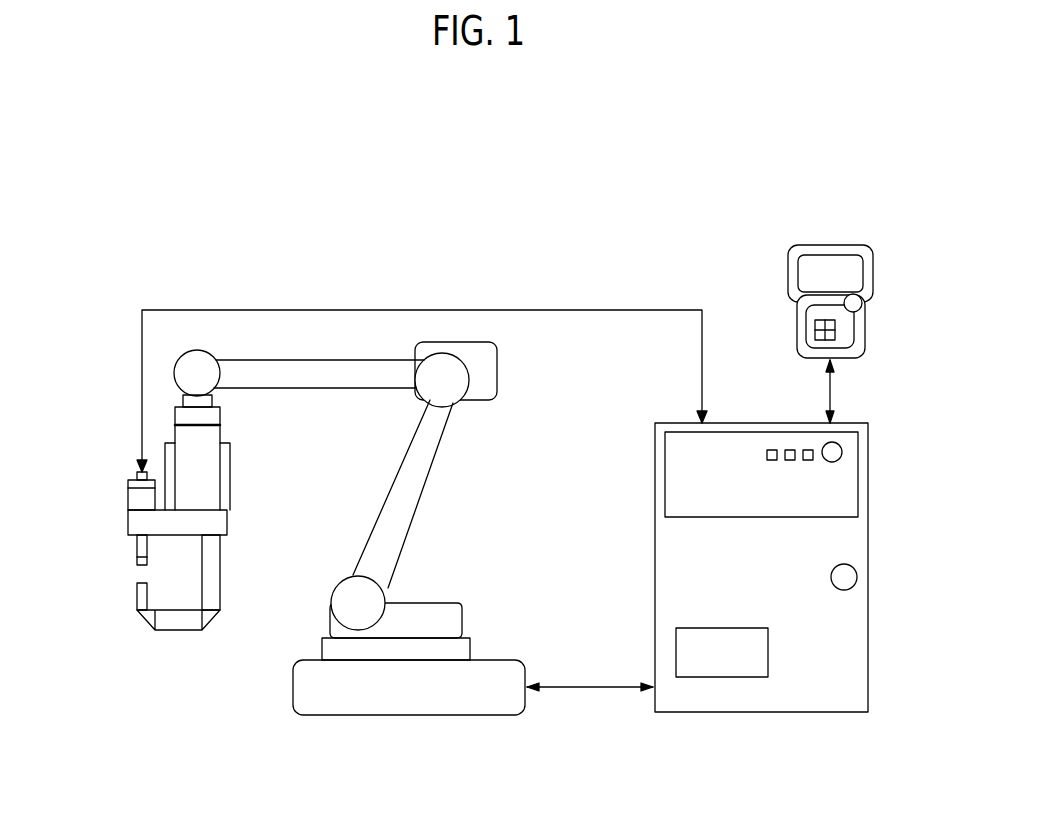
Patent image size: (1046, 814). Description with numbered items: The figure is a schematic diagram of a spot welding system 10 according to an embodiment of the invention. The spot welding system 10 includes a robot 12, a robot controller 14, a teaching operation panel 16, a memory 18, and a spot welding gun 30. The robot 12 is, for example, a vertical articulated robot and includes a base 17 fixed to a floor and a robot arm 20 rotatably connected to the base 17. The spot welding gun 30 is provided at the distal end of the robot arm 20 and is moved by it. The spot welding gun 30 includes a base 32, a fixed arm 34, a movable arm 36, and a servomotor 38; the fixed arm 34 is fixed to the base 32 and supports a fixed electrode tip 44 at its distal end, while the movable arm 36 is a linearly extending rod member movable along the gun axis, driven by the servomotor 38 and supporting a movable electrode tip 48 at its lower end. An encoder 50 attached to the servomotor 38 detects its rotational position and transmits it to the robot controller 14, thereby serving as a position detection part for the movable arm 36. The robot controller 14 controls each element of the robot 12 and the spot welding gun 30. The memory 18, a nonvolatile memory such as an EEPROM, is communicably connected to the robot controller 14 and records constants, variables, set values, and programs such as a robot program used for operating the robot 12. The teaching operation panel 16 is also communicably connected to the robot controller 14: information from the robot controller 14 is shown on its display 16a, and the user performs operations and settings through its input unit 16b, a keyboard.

The spot welding system 10 is at (717, 121).
The robot 12 is at (369, 561).
The robot controller 14 is at (793, 567).
The teaching operation panel 16 is at (828, 261).
The display 16a is at (813, 272).
The input unit 16b is at (817, 322).
The base 17 is at (485, 705).
The memory 18 is at (735, 628).
The robot arm 20 is at (400, 480).
The spot welding gun 30 is at (177, 502).
The base 32 is at (220, 523).
The fixed arm 34 is at (212, 590).
The movable arm 36 is at (138, 547).
The servomotor 38 is at (132, 498).
The fixed electrode tip 44 is at (138, 588).
The movable electrode tip 48 is at (138, 558).
The encoder 50 is at (138, 473).